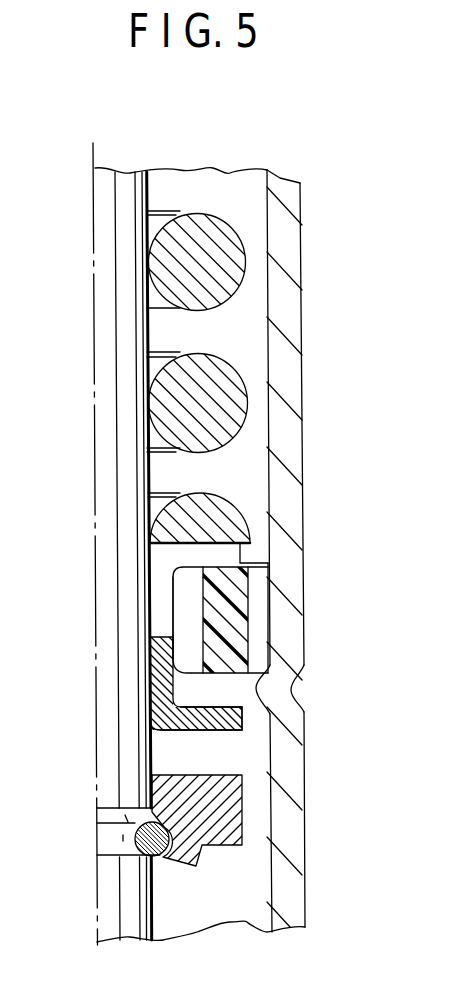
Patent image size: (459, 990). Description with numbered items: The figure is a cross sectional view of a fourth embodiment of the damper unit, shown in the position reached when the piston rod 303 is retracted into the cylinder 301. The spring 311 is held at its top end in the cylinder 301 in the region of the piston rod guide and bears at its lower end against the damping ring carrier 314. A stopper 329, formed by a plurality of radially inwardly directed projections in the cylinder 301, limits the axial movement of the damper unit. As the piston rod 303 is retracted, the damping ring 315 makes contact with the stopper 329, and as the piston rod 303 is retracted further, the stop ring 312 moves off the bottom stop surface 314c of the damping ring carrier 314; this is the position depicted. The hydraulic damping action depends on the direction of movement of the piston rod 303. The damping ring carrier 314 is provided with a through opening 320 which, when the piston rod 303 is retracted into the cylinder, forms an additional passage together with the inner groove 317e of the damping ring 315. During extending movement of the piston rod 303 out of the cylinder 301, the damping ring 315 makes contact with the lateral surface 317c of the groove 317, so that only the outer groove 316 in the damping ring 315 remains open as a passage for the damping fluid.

The cylinder 301 is at (293, 225).
The piston rod 303 is at (123, 175).
The spring 311 is at (208, 218).
The stop ring 312 is at (232, 808).
The damping ring carrier 314 is at (228, 738).
The bottom stop surface 314c is at (242, 731).
The damping ring 315 is at (242, 615).
The outer groove 316 is at (260, 597).
The groove 317 is at (222, 684).
The lateral surface 317c is at (223, 708).
The inner groove 317e is at (187, 602).
The through opening 320 is at (233, 553).
The stopper 329 is at (255, 693).